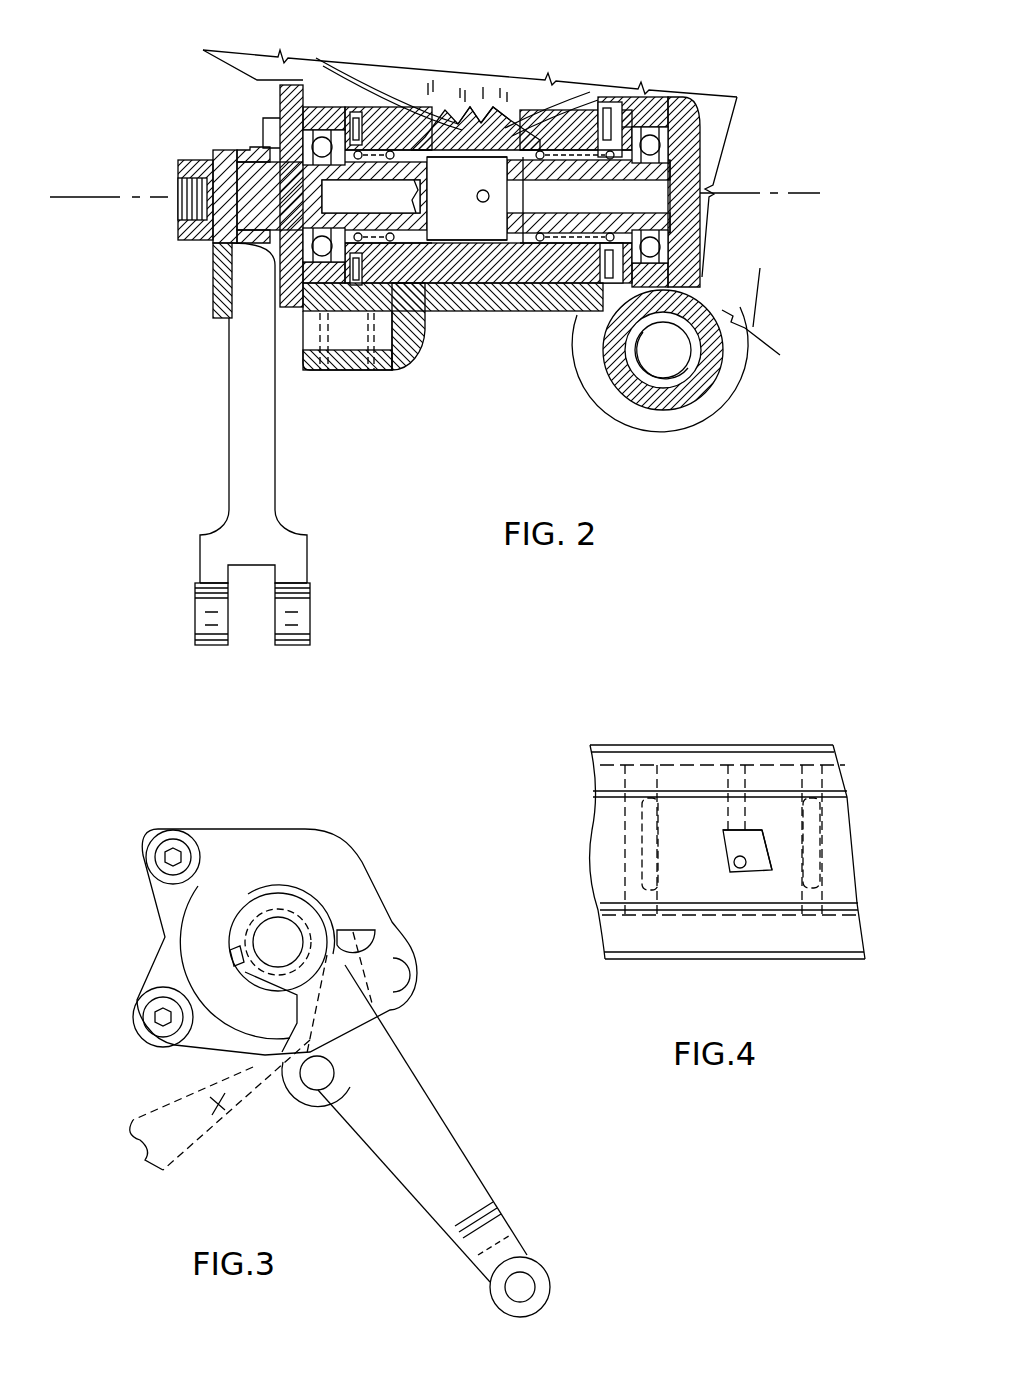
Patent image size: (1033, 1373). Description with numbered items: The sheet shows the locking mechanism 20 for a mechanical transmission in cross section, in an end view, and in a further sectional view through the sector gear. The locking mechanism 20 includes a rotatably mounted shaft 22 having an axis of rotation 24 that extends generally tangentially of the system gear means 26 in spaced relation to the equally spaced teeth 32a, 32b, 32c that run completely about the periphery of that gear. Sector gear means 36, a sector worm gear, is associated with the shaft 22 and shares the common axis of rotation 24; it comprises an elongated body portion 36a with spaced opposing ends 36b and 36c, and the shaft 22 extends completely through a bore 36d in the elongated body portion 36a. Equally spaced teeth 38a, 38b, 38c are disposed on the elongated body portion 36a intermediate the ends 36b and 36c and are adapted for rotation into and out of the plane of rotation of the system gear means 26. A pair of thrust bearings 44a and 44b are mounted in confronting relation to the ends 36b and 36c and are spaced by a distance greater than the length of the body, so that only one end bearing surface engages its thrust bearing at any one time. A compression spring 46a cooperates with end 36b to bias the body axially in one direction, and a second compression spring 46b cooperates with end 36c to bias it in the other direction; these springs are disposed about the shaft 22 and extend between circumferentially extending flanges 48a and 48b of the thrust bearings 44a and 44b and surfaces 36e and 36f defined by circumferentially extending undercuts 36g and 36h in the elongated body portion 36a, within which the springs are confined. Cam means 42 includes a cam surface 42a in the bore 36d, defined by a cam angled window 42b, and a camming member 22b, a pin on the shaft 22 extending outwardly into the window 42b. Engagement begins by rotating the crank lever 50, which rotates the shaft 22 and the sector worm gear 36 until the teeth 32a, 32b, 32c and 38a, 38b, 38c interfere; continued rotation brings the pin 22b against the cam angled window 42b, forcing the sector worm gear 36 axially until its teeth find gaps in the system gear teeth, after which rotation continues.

In FIG. 2, the locking mechanism 20 is at (435, 322).
In FIG. 3, the locking mechanism 20 is at (340, 1034).
In FIG. 2, the rotatably mounted shaft 22 is at (257, 178).
In FIG. 3, the rotatably mounted shaft 22 is at (285, 940).
In FIG. 4, the camming member 22b is at (738, 868).
In FIG. 2, the axis of rotation 24 is at (80, 196).
In FIG. 2, the system gear means 26 is at (407, 76).
In FIG. 2, the tooth 32a is at (445, 110).
In FIG. 2, the tooth 32b is at (482, 108).
In FIG. 2, the tooth 32c is at (512, 122).
In FIG. 2, the sector gear means 36 is at (505, 216).
In FIG. 4, the sector gear means 36 is at (820, 962).
In FIG. 2, the elongated body portion 36a is at (421, 108).
In FIG. 2, the spaced opposing end 36b is at (302, 83).
In FIG. 2, the spaced opposing end 36c is at (592, 140).
In FIG. 2, the bore 36d is at (524, 150).
In FIG. 2, the surface 36e is at (388, 170).
In FIG. 2, the surface 36f is at (612, 152).
In FIG. 2, the circumferentially extending undercut 36g is at (422, 318).
In FIG. 2, the circumferentially extending undercut 36h is at (577, 250).
In FIG. 2, the tooth 38a is at (467, 198).
In FIG. 2, the tooth 38b is at (467, 171).
In FIG. 2, the tooth 38c is at (478, 227).
In FIG. 4, the cam means 42 is at (768, 836).
In FIG. 4, the cam surface 42a is at (762, 857).
In FIG. 4, the cam angled window 42b is at (740, 836).
In FIG. 2, the thrust bearing 44a is at (345, 300).
In FIG. 2, the thrust bearing 44b is at (637, 262).
In FIG. 2, the compression spring 46a is at (373, 313).
In FIG. 2, the second compression spring 46b is at (605, 240).
In FIG. 2, the circumferentially extending flange 48a is at (352, 246).
In FIG. 2, the circumferentially extending flange 48b is at (632, 239).
In FIG. 2, the crank lever 50 is at (229, 462).
In FIG. 3, the crank lever 50 is at (425, 1130).